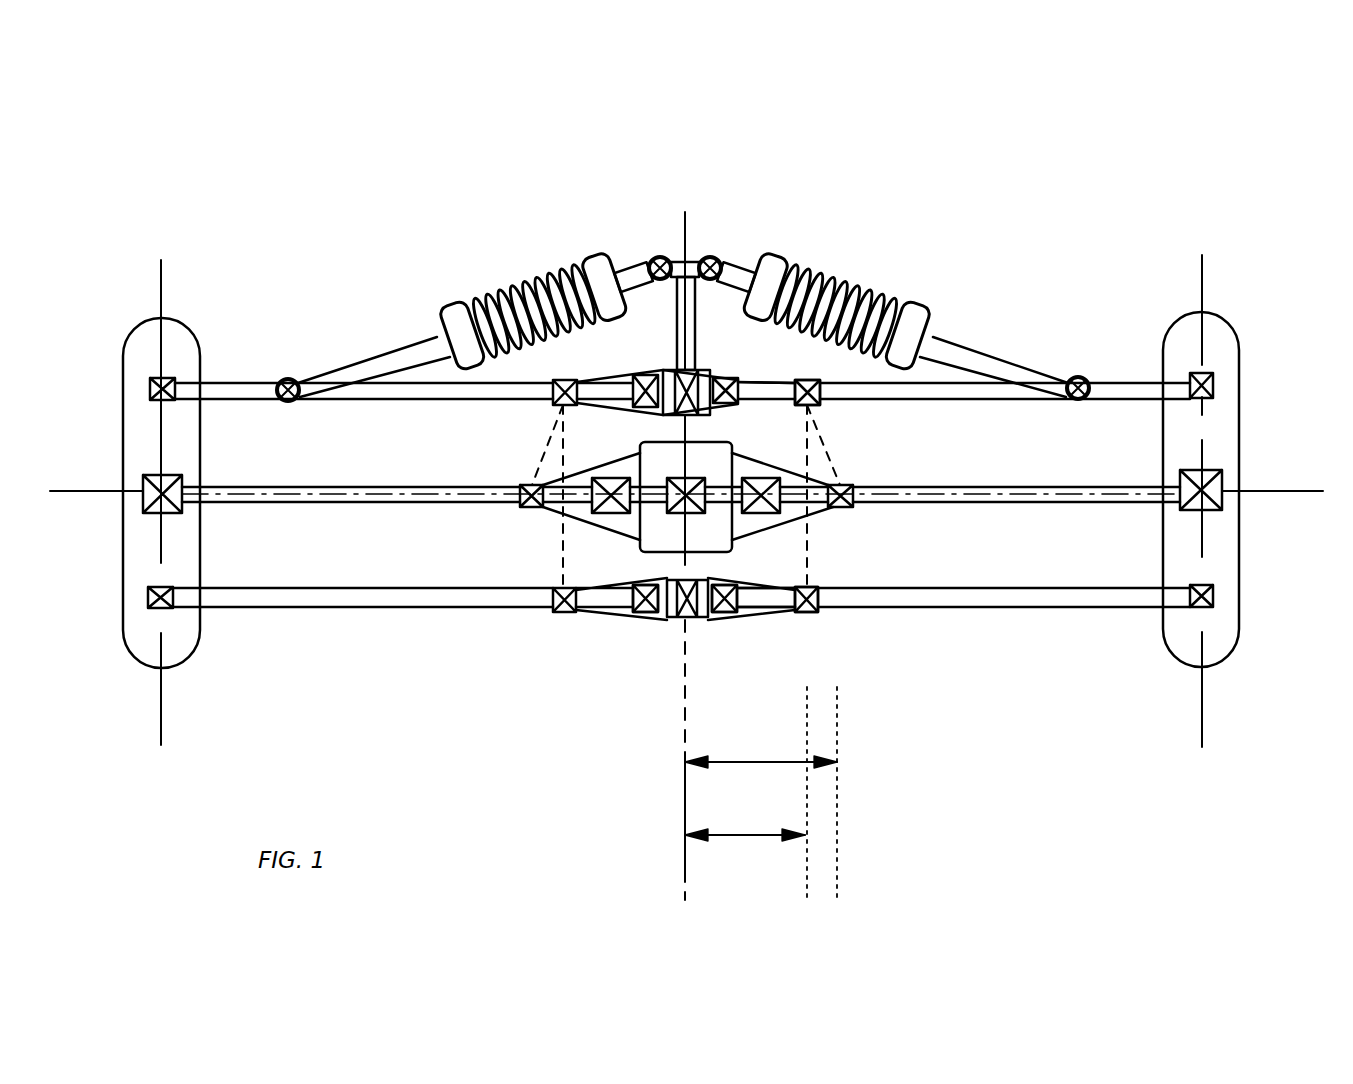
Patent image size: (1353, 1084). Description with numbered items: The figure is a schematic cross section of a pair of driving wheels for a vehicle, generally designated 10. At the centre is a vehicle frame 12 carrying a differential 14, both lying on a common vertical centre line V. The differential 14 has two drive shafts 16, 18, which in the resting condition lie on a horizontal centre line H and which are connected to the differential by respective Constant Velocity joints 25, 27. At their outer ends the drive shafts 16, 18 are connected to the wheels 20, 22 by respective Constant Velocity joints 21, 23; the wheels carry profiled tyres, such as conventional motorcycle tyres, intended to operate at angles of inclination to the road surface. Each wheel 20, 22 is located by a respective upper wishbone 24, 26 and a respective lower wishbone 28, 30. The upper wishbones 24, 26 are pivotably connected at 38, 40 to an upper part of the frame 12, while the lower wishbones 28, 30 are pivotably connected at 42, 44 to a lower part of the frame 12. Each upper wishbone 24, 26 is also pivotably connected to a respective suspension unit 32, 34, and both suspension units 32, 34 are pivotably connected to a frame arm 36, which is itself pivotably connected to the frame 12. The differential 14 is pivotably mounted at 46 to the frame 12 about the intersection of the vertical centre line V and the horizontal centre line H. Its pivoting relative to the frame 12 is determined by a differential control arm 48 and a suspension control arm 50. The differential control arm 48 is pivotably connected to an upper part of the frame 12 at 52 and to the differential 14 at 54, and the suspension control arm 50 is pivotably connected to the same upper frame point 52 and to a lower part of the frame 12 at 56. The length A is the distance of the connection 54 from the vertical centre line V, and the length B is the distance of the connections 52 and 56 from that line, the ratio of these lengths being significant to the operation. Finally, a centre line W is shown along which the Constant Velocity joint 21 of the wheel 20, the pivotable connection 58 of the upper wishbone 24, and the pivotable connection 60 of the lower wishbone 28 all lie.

The pair of driving wheels for a vehicle 10 is at (345, 122).
The vehicle frame 12 is at (690, 378).
The differential 14 is at (640, 550).
The drive shaft 16 is at (1085, 503).
The drive shaft 18 is at (300, 503).
The wheel 20 is at (1185, 650).
The Constant Velocity joint 21 is at (1222, 510).
The wheel 22 is at (188, 642).
The Constant Velocity joint 23 is at (150, 510).
The upper wishbone 24 is at (1133, 383).
The Constant Velocity joint 25 is at (700, 517).
The upper wishbone 26 is at (245, 390).
The Constant Velocity joint 27 is at (540, 488).
The lower wishbone 28 is at (1055, 598).
The lower wishbone 30 is at (272, 600).
The suspension unit 32 is at (858, 287).
The suspension unit 34 is at (512, 290).
The frame arm 36 is at (692, 330).
The pivotable connection 38 is at (732, 378).
The pivotable connection 40 is at (655, 408).
The pivotable connection 42 is at (718, 612).
The pivotable connection 44 is at (643, 620).
The pivotable mounting 46 is at (732, 552).
The differential control arm 48 is at (835, 465).
The suspension control arm 50 is at (810, 450).
The pivotable connection 52 is at (808, 375).
The pivotable connection 54 is at (845, 505).
The pivotable connection 56 is at (803, 613).
The pivotable connection 58 is at (1220, 373).
The pivotable connection 60 is at (1215, 598).